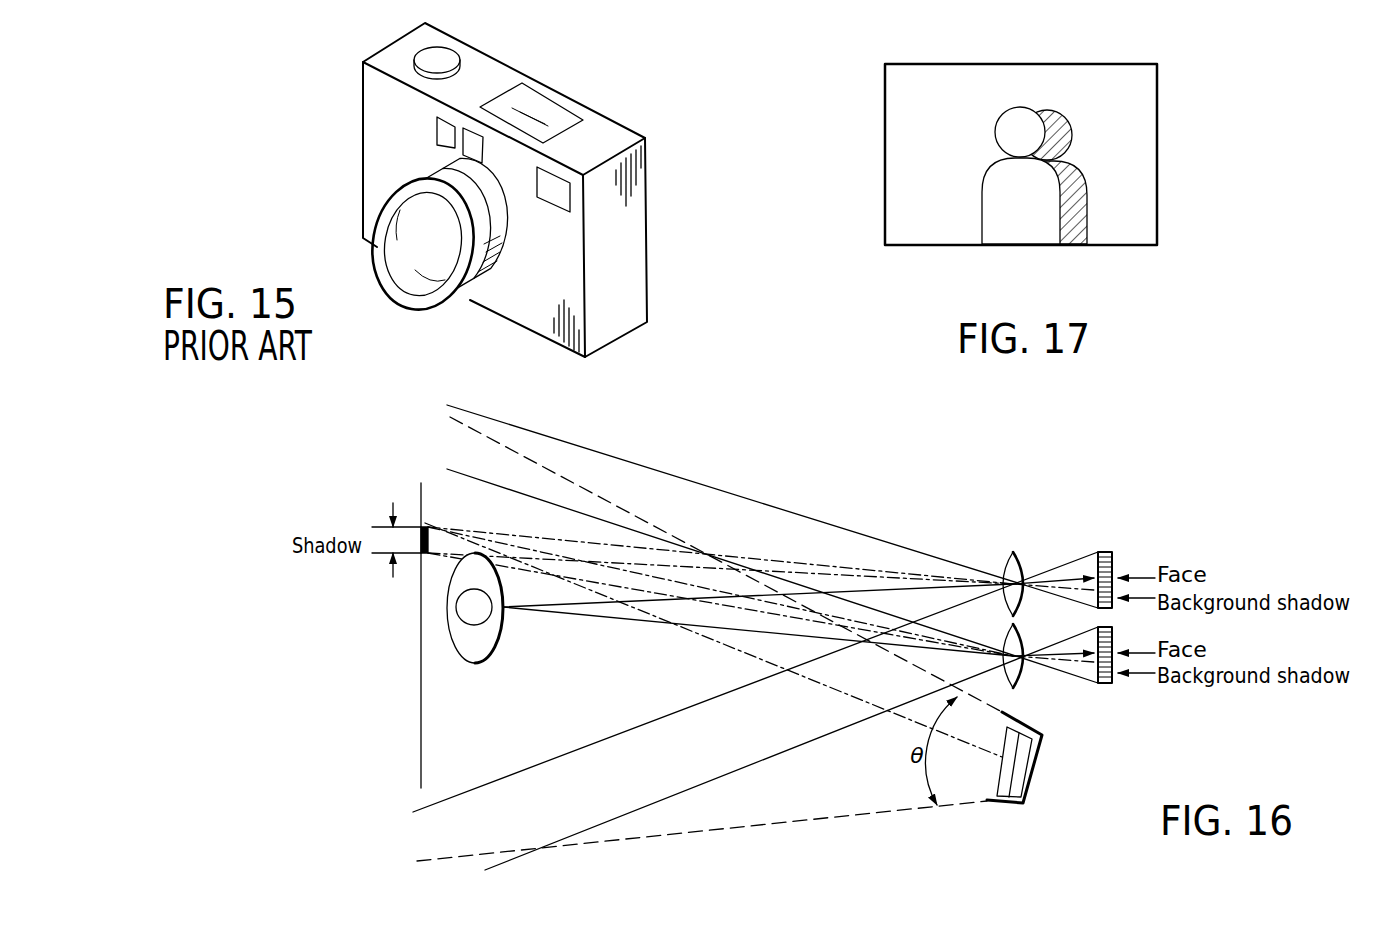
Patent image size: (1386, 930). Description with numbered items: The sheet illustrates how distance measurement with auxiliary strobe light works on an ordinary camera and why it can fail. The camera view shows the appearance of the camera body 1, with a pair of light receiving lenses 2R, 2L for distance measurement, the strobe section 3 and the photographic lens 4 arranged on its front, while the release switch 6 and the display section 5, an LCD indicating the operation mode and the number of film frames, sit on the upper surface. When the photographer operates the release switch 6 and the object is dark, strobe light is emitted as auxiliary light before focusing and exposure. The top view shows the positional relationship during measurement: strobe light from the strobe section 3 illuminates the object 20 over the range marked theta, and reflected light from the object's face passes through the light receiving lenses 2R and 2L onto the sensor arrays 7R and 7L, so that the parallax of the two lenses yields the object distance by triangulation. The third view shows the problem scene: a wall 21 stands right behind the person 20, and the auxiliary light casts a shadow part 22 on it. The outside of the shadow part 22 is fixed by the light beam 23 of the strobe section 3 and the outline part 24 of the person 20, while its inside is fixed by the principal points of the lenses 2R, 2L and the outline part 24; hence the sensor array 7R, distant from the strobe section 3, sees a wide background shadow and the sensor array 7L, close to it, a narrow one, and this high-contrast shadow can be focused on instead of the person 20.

In FIG. 15, the camera body 1 is at (622, 125).
In FIG. 15, the right light receiving lens 2R is at (448, 117).
In FIG. 16, the right light receiving lens 2R is at (1010, 569).
In FIG. 15, the left light receiving lens 2L is at (483, 152).
In FIG. 16, the left light receiving lens 2L is at (1020, 669).
In FIG. 15, the strobe section 3 is at (548, 167).
In FIG. 16, the strobe section 3 is at (1028, 775).
In FIG. 15, the photographic lens 4 is at (452, 305).
In FIG. 15, the display section 5 is at (547, 97).
In FIG. 15, the release switch 6 is at (440, 52).
In FIG. 16, the right sensor array 7R is at (1104, 562).
In FIG. 16, the left sensor array 7L is at (1105, 676).
In FIG. 17, the object 20 is at (1027, 240).
In FIG. 16, the object 20 is at (477, 663).
In FIG. 17, the wall 21 is at (885, 183).
In FIG. 17, the shadow part 22 is at (1075, 233).
In FIG. 16, the shadow part 22 is at (428, 527).
In FIG. 16, the light beam 23 is at (710, 645).
In FIG. 16, the outline part 24 is at (468, 553).